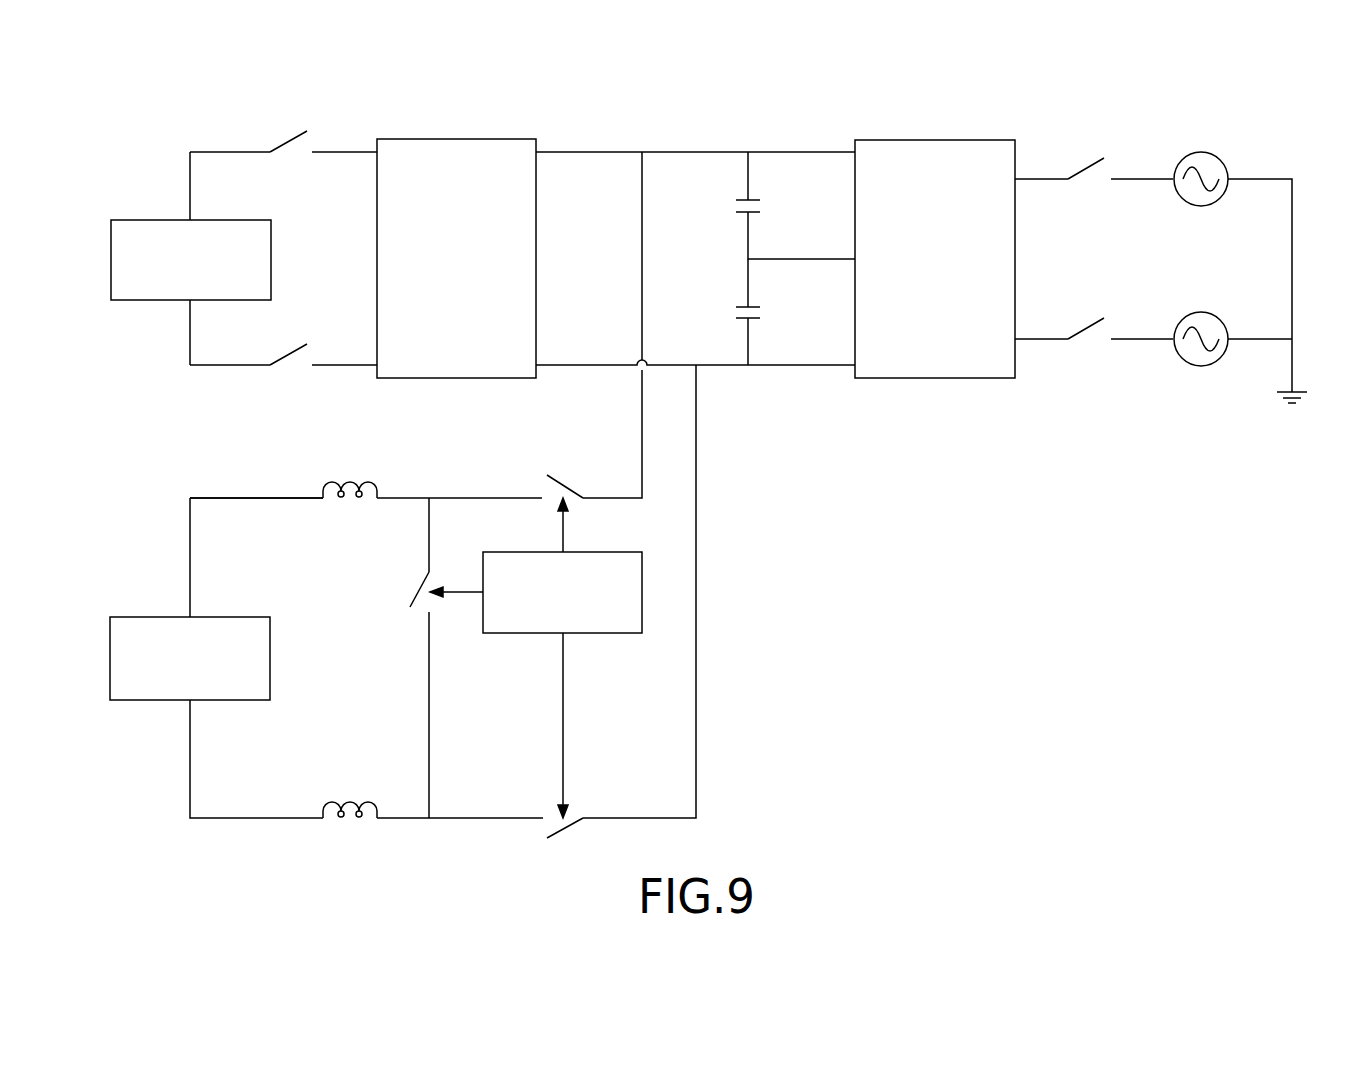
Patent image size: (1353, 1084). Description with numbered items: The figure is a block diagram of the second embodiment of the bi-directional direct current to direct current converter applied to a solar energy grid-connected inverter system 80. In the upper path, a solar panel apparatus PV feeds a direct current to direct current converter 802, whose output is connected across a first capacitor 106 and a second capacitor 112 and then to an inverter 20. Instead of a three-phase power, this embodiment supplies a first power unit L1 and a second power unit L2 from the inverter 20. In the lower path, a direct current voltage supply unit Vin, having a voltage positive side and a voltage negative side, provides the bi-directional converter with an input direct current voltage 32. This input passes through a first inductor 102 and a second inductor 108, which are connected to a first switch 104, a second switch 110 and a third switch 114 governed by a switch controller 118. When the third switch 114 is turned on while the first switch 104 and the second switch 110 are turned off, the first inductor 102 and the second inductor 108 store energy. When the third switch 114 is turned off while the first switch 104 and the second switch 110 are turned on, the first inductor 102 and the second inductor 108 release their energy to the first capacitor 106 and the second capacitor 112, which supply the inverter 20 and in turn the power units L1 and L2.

The solar energy grid-connected inverter system 80 is at (707, 101).
The direct current to direct current converter 802 is at (455, 145).
The inverter 20 is at (935, 147).
The first capacitor 106 is at (765, 203).
The second capacitor 112 is at (765, 308).
The input direct current voltage 32 is at (256, 497).
The first inductor 102 is at (351, 481).
The second inductor 108 is at (337, 800).
The first switch 104 is at (543, 490).
The second switch 110 is at (552, 817).
The third switch 114 is at (421, 608).
The switch controller 118 is at (573, 558).
The solar panel apparatus PV is at (180, 226).
The direct current voltage supply unit Vin is at (178, 619).
The first power unit L1 is at (1211, 171).
The second power unit L2 is at (1211, 331).